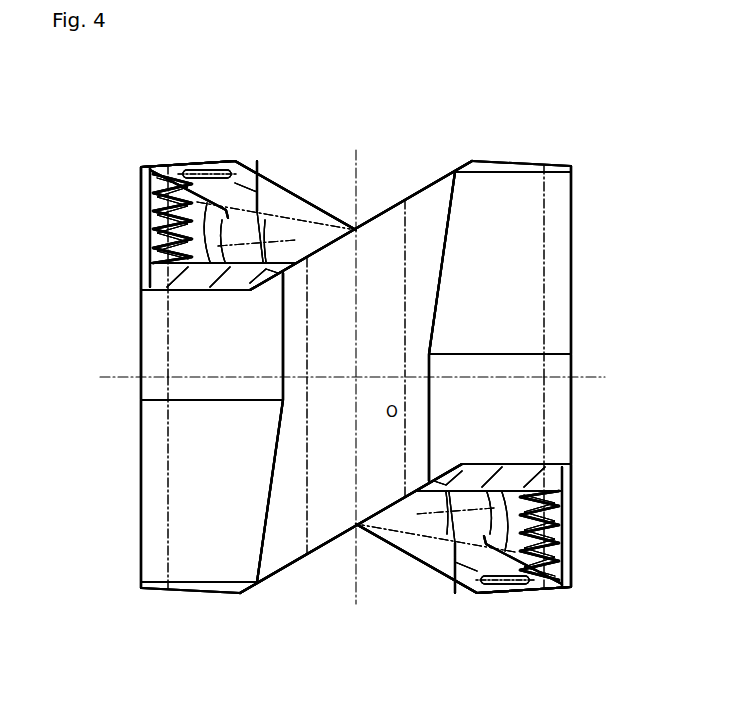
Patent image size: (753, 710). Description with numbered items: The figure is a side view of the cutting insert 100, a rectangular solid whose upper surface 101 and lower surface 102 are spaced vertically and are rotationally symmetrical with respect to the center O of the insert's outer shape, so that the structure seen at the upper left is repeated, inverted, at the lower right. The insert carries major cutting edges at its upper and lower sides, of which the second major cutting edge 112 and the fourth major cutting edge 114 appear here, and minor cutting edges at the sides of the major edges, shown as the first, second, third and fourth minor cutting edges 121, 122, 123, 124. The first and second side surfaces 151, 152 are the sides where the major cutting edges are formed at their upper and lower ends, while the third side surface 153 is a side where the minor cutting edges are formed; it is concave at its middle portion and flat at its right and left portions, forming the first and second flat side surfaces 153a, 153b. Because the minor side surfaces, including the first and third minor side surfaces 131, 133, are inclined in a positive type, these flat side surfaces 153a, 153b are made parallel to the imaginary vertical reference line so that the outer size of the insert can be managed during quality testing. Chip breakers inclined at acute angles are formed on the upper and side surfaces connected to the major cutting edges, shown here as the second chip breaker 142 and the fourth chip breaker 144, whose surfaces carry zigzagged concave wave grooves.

The cutting insert 100 is at (180, 73).
The upper surface 101 is at (278, 263).
The lower surface 102 is at (437, 490).
The second major cutting edge 112 is at (148, 197).
The fourth major cutting edge 114 is at (570, 560).
The first minor cutting edge 121 is at (553, 163).
The second minor cutting edge 122 is at (149, 166).
The third minor cutting edge 123 is at (164, 586).
The fourth minor cutting edge 124 is at (566, 592).
The first minor side surface 131 is at (555, 258).
The third minor side surface 133 is at (158, 468).
The second chip breaker 142 is at (150, 237).
The fourth chip breaker 144 is at (558, 530).
The first side surface 151 is at (575, 297).
The second side surface 152 is at (142, 300).
The third side surface 153 is at (327, 497).
The first flat side surface 153a is at (510, 423).
The second flat side surface 153b is at (196, 329).